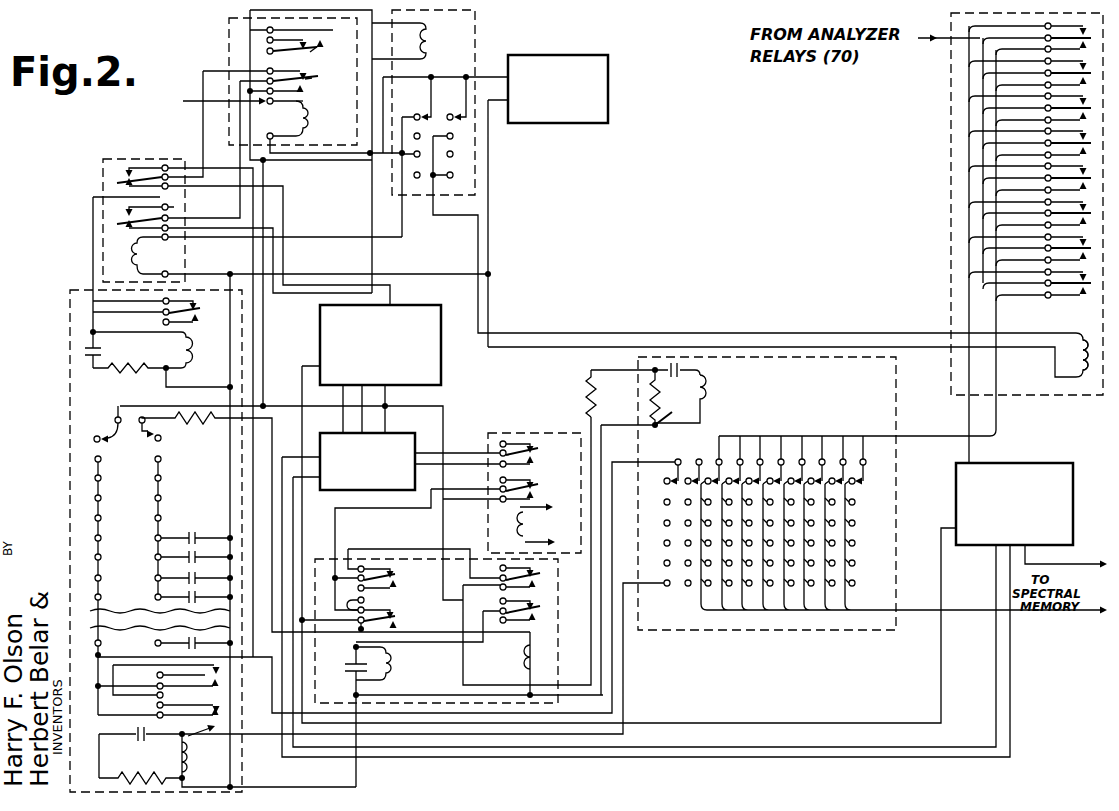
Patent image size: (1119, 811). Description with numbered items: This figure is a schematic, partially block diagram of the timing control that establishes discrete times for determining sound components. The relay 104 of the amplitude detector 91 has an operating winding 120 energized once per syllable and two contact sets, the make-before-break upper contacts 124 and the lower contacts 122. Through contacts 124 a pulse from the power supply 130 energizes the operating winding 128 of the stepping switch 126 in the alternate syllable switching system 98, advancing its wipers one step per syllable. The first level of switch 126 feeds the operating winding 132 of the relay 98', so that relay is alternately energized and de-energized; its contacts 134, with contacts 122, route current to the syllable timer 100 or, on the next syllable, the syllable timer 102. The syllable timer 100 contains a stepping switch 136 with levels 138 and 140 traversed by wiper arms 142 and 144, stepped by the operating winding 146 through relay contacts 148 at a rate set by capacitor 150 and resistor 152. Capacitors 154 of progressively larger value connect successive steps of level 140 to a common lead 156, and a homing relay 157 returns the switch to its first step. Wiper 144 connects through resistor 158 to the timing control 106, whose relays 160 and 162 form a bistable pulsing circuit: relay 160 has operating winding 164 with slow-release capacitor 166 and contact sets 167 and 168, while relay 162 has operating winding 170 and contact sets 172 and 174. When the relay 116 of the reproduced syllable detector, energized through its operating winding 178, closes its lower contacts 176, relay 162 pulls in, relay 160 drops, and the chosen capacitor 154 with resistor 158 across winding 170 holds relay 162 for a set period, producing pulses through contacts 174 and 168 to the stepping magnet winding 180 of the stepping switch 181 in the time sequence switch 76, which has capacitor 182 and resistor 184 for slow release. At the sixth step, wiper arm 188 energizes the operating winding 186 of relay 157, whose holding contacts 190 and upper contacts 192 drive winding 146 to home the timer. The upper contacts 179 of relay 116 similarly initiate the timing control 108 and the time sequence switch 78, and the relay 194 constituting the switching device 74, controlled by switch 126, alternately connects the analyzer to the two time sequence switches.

The switching device 74 is at (950, 171).
The time sequence switch 76 is at (895, 471).
The time sequence switch 78 is at (1073, 502).
The amplitude detector 91 is at (227, 42).
The alternate syllable switching system 98 is at (455, 102).
The relay 98' is at (144, 206).
The syllable timer 100 is at (85, 290).
The syllable timer 102 is at (424, 305).
The relay 104 is at (306, 118).
The timing control 106 is at (387, 558).
The timing control 108 is at (416, 432).
The relay 116 is at (567, 433).
The operating winding 120 is at (310, 110).
The lower set of contacts 122 is at (312, 82).
The upper set of contacts 124 is at (324, 58).
The stepping switch 126 is at (458, 64).
The operating winding 128 is at (427, 34).
The power supply 130 is at (610, 68).
The operating winding 132 is at (137, 258).
The set of contacts 134 is at (180, 214).
The stepping switch 136 is at (218, 374).
The level of stationary contacts 138 is at (103, 462).
The level of stationary contacts 140 is at (162, 478).
The wiper arm 142 is at (110, 430).
The wiper arm 144 is at (163, 440).
The operating winding 146 is at (190, 350).
The relay contacts 148 is at (188, 300).
The capacitor 150 is at (104, 355).
The resistor 152 is at (144, 376).
The capacitors 154 is at (203, 530).
The common lead 156 is at (230, 500).
The homing relay 157 is at (170, 768).
The resistor 158 is at (210, 426).
The relay 160 is at (345, 694).
The relay 162 is at (512, 681).
The operating winding 164 is at (394, 663).
The capacitor 166 is at (346, 664).
The lower set of contacts 167 is at (392, 592).
The upper set of contacts 168 is at (356, 564).
The operating winding 170 is at (523, 655).
The lower set of contacts 172 is at (544, 607).
The upper set of contacts 174 is at (544, 578).
The lower set of contacts 176 is at (537, 487).
The operating winding 178 is at (534, 535).
The upper set of contacts 179 is at (538, 457).
The stepping magnet winding 180 is at (707, 397).
The stepping switch 181 is at (683, 628).
The capacitor 182 is at (706, 369).
The resistor 184 is at (661, 413).
The operating winding 186 is at (185, 777).
The wiper arm 188 is at (684, 458).
The holding contacts 190 is at (186, 748).
The upper set of contacts 192 is at (170, 668).
The relay 194 is at (1072, 333).